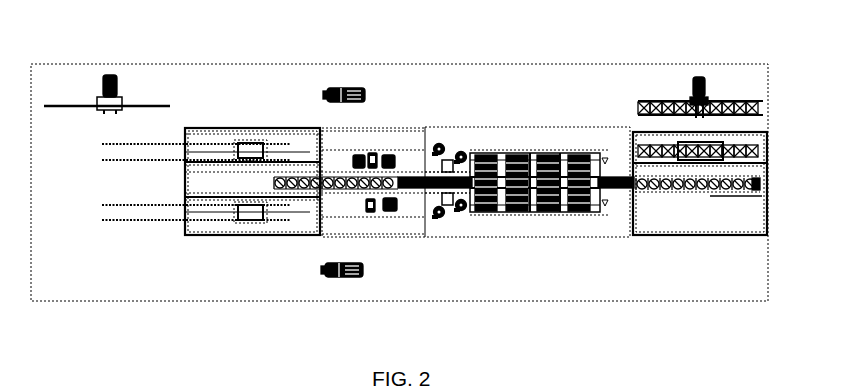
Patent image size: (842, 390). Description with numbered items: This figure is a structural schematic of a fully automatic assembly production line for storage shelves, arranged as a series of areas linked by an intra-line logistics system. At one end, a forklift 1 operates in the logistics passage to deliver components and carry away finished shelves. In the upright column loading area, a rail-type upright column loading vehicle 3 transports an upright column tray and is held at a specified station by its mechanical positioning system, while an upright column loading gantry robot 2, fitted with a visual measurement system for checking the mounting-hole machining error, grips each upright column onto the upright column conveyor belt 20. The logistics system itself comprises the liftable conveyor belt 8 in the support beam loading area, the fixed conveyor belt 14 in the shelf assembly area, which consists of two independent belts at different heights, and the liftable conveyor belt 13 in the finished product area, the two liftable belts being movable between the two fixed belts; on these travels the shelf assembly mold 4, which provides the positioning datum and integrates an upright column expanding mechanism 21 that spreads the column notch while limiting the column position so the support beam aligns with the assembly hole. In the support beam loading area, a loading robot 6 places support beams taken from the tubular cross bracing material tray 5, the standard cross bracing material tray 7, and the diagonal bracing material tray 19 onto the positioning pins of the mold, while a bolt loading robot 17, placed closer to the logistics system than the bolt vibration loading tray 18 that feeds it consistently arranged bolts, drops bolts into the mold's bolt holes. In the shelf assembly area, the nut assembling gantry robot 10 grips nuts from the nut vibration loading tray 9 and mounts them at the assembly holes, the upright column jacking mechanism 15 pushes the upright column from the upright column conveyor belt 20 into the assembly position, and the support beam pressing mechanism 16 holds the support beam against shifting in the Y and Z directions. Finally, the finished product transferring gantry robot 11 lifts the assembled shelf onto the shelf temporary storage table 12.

The forklift 1 is at (103, 70).
The upright column loading gantry robot 2 is at (185, 126).
The rail-type upright column loading vehicle 3 is at (240, 141).
The shelf assembly mold 4 is at (280, 175).
The tubular cross bracing material tray 5 is at (353, 153).
The loading robot 6 is at (372, 152).
The standard cross bracing material tray 7 is at (386, 154).
The liftable conveyor belt in support beam loading area 8 is at (441, 143).
The nut vibration loading tray 9 is at (466, 151).
The nut assembling gantry robot 10 is at (553, 153).
The finished product transferring gantry robot 11 is at (648, 131).
The shelf temporary storage table 12 is at (710, 141).
The liftable conveyor belt in finished product area 13 is at (748, 193).
The fixed conveyor belt in shelf assembly area 14 is at (606, 208).
The upright column jacking mechanism 15 is at (561, 213).
The support beam pressing mechanism 16 is at (524, 213).
The bolt loading robot 17 is at (461, 213).
The bolt vibration loading tray 18 is at (437, 219).
The diagonal bracing material tray 19 is at (388, 213).
The upright column conveyor belt 20 is at (358, 228).
The upright column expanding mechanism 21 is at (262, 224).